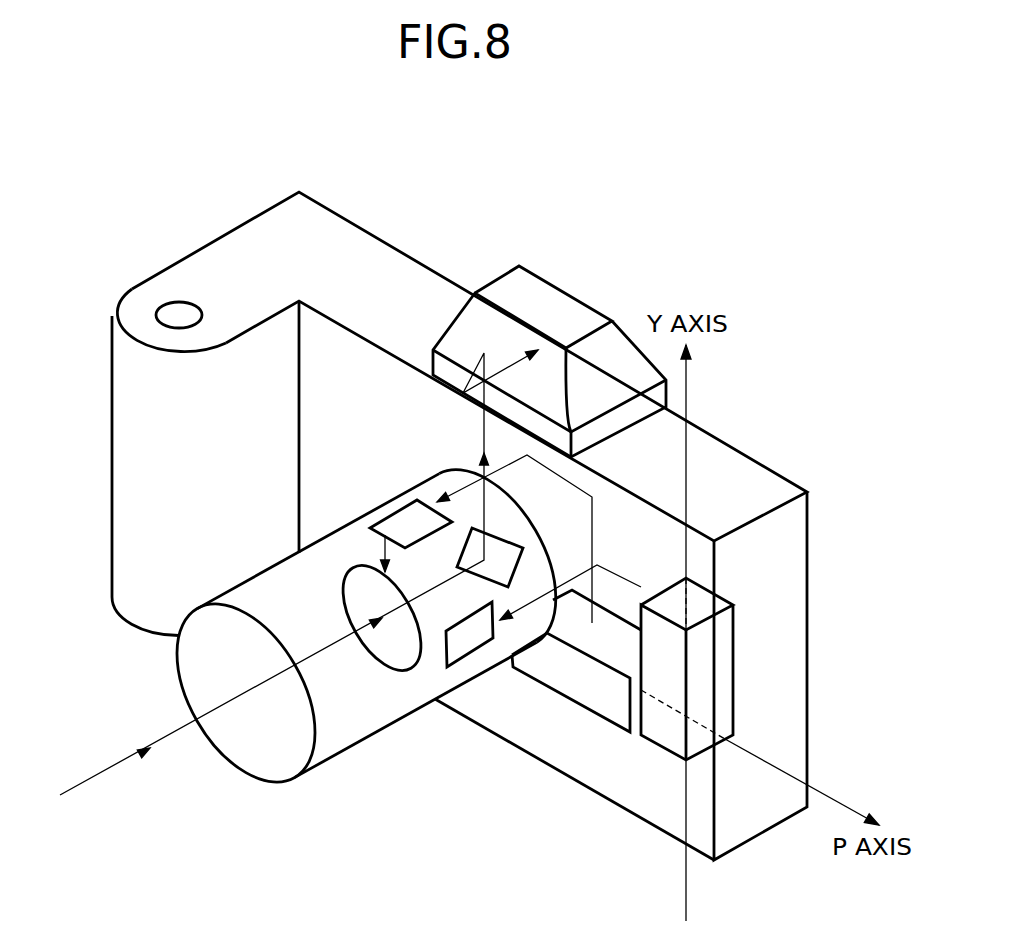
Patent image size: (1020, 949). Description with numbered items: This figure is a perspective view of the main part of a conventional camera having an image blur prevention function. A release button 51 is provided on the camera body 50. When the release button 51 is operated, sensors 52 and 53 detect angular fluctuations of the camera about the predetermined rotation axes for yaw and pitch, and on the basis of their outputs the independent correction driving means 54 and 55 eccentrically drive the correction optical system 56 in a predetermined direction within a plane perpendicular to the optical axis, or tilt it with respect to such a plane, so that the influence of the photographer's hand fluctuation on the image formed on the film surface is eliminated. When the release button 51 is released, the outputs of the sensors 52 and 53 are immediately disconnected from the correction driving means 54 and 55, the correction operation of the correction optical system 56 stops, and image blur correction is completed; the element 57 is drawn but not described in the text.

The camera body 50 is at (755, 463).
The release button 51 is at (172, 307).
The sensor 52 is at (729, 673).
The sensor 53 is at (585, 700).
The correction driving means 54 is at (470, 647).
The correction driving means 55 is at (403, 517).
The correction optical system 56 is at (390, 657).
The photographing lens 57 is at (277, 778).